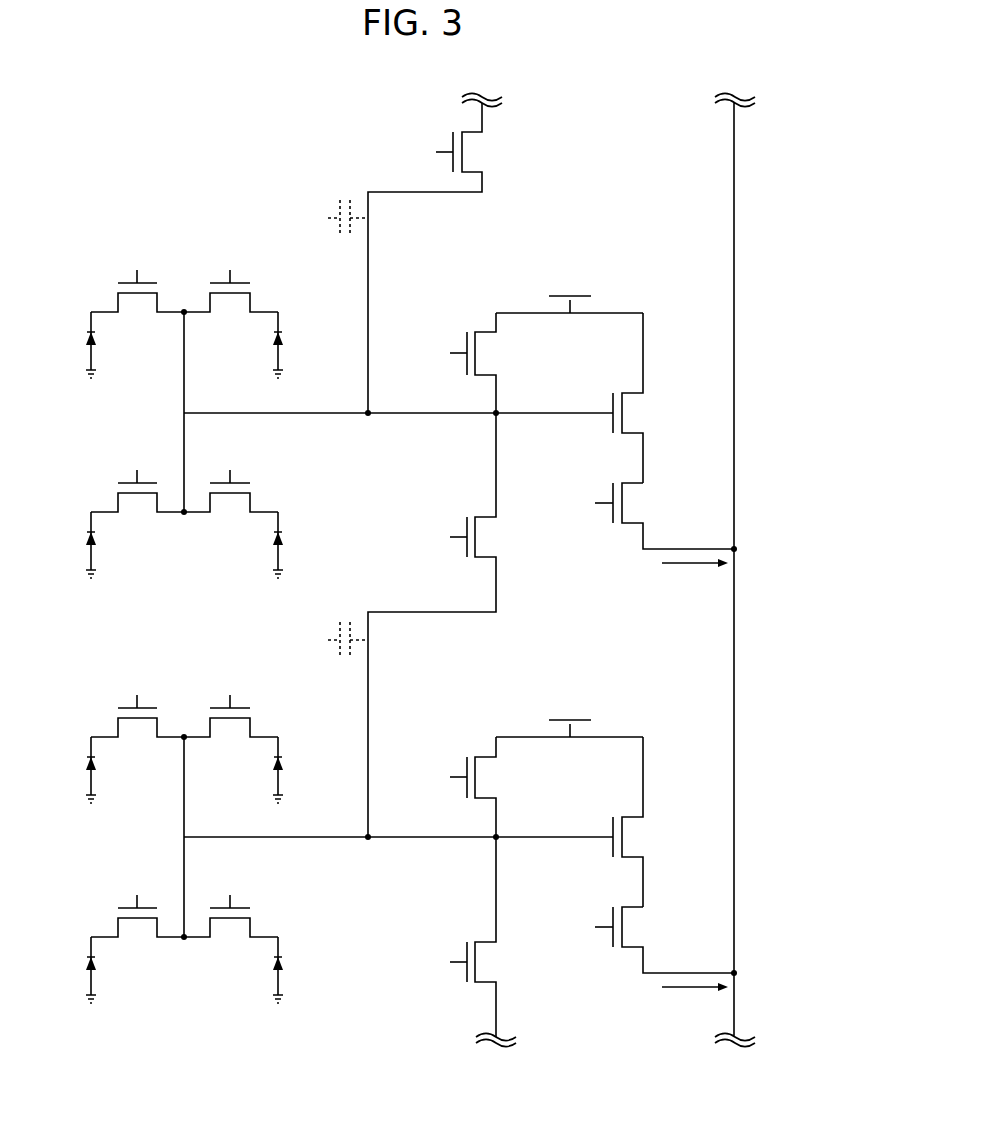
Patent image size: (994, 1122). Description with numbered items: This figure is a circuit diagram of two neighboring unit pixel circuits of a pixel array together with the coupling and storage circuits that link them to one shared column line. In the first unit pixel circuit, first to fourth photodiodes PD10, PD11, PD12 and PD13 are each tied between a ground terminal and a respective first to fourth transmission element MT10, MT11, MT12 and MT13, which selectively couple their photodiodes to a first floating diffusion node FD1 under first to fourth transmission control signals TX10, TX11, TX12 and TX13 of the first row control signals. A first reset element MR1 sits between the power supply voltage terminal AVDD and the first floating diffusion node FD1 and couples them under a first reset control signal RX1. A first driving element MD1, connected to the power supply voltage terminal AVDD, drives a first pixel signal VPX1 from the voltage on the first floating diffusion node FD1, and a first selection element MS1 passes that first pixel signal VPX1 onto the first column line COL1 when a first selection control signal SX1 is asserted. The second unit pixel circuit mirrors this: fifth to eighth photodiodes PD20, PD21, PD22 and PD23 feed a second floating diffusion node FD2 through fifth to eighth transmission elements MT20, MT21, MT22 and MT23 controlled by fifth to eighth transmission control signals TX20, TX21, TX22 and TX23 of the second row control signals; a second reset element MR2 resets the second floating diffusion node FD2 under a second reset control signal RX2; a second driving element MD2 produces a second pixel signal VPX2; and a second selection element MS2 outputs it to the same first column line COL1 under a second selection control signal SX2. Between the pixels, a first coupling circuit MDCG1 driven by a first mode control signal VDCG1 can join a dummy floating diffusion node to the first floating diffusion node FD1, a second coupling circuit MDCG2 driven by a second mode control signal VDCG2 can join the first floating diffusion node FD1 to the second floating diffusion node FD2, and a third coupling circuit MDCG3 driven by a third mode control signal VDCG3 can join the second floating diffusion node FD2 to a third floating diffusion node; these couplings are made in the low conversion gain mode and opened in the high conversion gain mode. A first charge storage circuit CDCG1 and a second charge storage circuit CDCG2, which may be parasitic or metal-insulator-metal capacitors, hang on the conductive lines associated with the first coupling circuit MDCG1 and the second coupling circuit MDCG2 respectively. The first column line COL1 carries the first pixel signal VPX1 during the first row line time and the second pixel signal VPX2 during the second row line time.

The first transmission element MT10 is at (137, 312).
The second transmission element MT11 is at (231, 312).
The third transmission element MT12 is at (137, 512).
The fourth transmission element MT13 is at (231, 512).
The fifth transmission element MT20 is at (137, 737).
The sixth transmission element MT21 is at (231, 737).
The seventh transmission element MT22 is at (137, 937).
The eighth transmission element MT23 is at (231, 937).
The first transmission control signal TX10 is at (136, 261).
The second transmission control signal TX11 is at (229, 261).
The third transmission control signal TX12 is at (136, 461).
The fourth transmission control signal TX13 is at (229, 461).
The fifth transmission control signal TX20 is at (136, 686).
The sixth transmission control signal TX21 is at (229, 686).
The seventh transmission control signal TX22 is at (136, 886).
The eighth transmission control signal TX23 is at (229, 886).
The first photodiode PD10 is at (69, 345).
The second photodiode PD11 is at (300, 345).
The third photodiode PD12 is at (69, 545).
The fourth photodiode PD13 is at (300, 545).
The fifth photodiode PD20 is at (69, 770).
The sixth photodiode PD21 is at (300, 770).
The seventh photodiode PD22 is at (69, 970).
The eighth photodiode PD23 is at (300, 970).
The first floating diffusion node FD1 is at (398, 426).
The second floating diffusion node FD2 is at (398, 850).
The first coupling circuit MDCG1 is at (455, 258).
The second coupling circuit MDCG2 is at (461, 625).
The third coupling circuit MDCG3 is at (511, 937).
The first mode control signal VDCG1 is at (413, 152).
The second mode control signal VDCG2 is at (429, 537).
The third mode control signal VDCG3 is at (429, 962).
The first charge storage circuit CDCG1 is at (316, 218).
The second charge storage circuit CDCG2 is at (316, 640).
The power supply voltage terminal AVDD is at (569, 503).
The first reset element MR1 is at (501, 363).
The second reset element MR2 is at (501, 787).
The first reset control signal RX1 is at (442, 353).
The second reset control signal RX2 is at (442, 777).
The first driving element MD1 is at (645, 398).
The second driving element MD2 is at (645, 822).
The first selection element MS1 is at (673, 516).
The second selection element MS2 is at (673, 940).
The first selection control signal SX1 is at (587, 503).
The second selection control signal SX2 is at (587, 927).
The first pixel signal VPX1 is at (695, 576).
The second pixel signal VPX2 is at (695, 1000).
The first column line COL1 is at (737, 660).